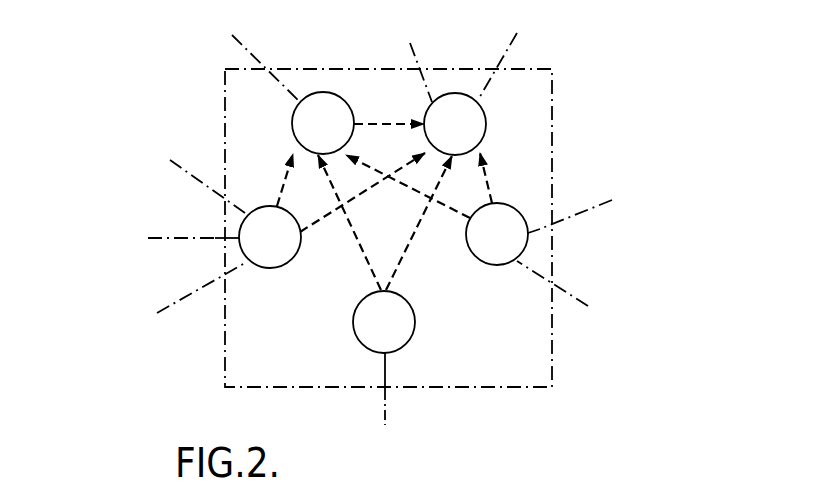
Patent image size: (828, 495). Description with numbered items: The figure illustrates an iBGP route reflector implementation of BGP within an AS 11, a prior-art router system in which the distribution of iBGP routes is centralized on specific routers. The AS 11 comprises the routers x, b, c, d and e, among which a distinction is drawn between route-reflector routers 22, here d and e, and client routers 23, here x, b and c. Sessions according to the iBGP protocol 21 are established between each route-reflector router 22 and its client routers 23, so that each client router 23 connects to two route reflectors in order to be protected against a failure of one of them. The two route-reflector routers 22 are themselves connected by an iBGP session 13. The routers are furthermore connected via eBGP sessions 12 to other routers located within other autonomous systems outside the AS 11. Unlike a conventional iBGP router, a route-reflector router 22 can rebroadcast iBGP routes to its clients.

The AS 11 is at (553, 183).
The eBGP session 12 is at (243, 43).
The iBGP session 13 is at (375, 121).
The iBGP protocol session 21 is at (288, 165).
The route-reflector router 22 is at (292, 118).
The client router 23 is at (270, 268).